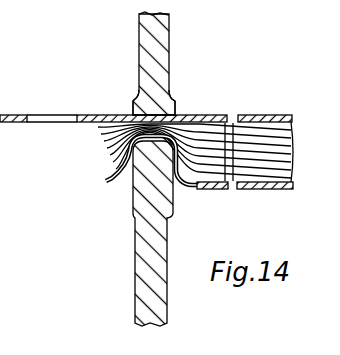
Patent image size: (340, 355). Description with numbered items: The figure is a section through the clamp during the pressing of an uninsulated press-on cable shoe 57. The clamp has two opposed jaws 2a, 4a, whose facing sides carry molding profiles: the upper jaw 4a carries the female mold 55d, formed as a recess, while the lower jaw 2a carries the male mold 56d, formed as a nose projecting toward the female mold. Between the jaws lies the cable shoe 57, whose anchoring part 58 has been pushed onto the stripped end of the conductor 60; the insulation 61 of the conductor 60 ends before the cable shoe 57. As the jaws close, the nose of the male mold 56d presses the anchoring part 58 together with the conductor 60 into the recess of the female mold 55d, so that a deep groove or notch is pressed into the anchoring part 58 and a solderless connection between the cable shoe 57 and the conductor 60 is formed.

The jaw 4a is at (168, 25).
The female mold 55d is at (158, 108).
The press-on cable shoe 57 is at (12, 122).
The conductor 60 is at (112, 137).
The insulation 61 is at (290, 117).
The anchoring part 58 is at (220, 188).
The male mold 56d is at (128, 187).
The jaw 2a is at (150, 293).